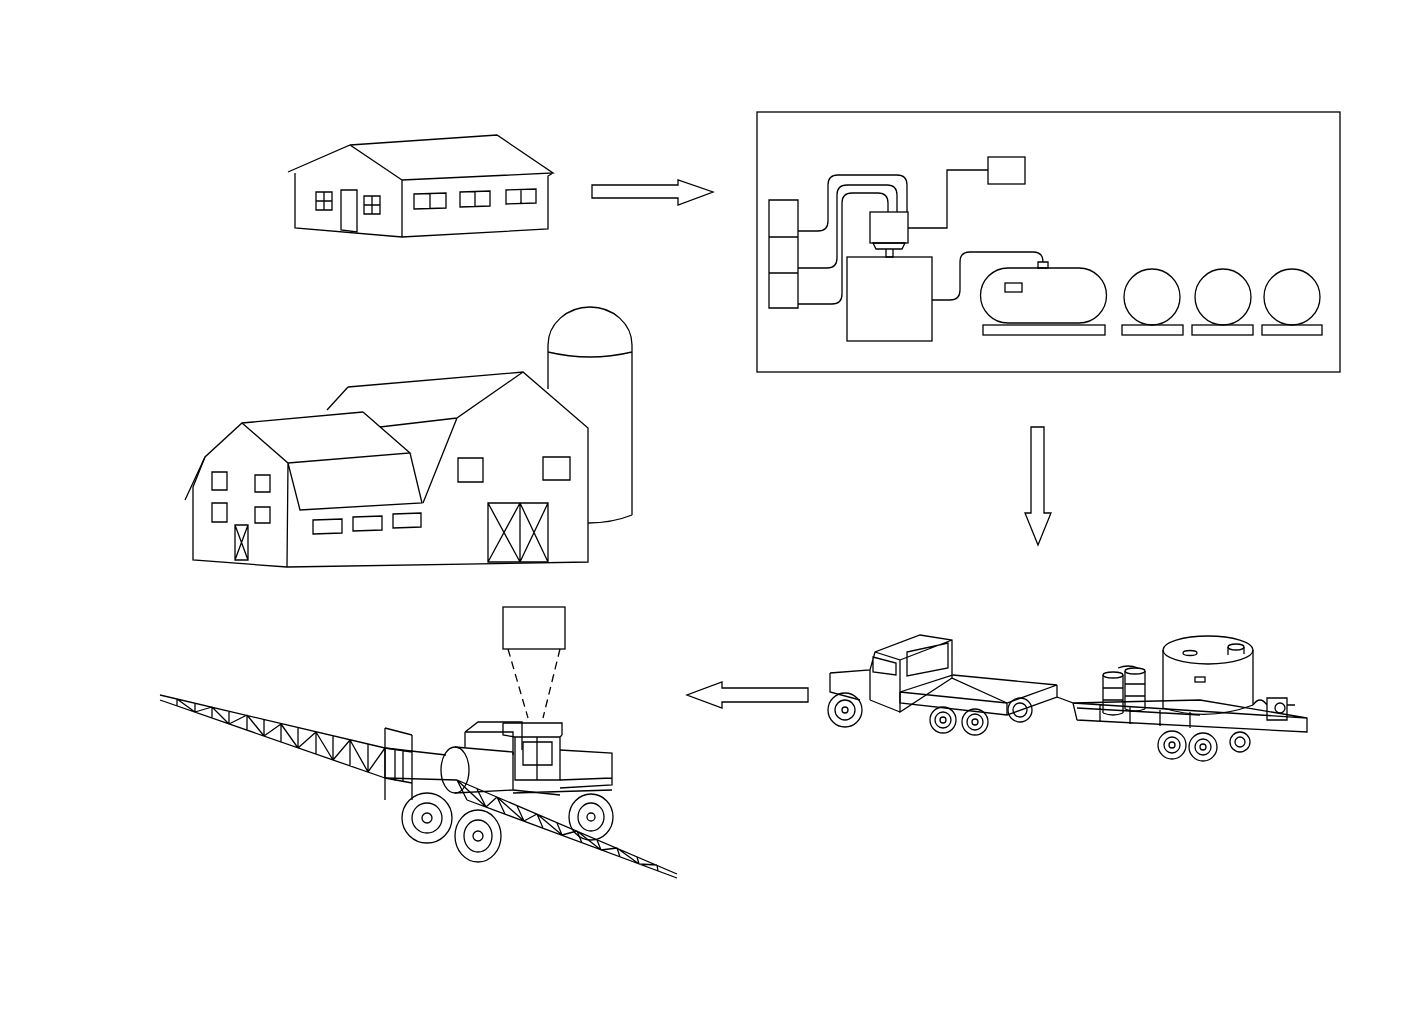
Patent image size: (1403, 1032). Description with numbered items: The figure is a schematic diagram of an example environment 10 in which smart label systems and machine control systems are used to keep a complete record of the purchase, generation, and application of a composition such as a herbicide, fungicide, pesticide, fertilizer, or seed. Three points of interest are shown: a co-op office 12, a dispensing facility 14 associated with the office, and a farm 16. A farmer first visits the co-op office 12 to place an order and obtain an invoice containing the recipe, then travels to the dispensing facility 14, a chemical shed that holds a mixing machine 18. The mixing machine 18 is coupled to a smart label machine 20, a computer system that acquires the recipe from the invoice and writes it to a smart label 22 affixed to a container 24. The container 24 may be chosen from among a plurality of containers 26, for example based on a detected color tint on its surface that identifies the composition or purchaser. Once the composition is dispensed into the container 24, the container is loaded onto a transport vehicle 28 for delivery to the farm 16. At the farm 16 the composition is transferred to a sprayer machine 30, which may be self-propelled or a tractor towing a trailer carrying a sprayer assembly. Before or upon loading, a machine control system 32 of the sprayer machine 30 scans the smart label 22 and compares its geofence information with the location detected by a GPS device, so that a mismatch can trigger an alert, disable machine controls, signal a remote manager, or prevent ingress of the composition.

The environment 10 is at (243, 122).
The co-op office 12 is at (517, 149).
The dispensing facility 14 is at (1138, 112).
The farm 16 is at (288, 388).
The mixing machine 18 is at (914, 210).
The smart label machine 20 is at (1026, 172).
The smart label 22 is at (1012, 293).
The container 24 is at (1063, 268).
The containers 26 is at (1222, 256).
The transport vehicle 28 is at (1286, 667).
The sprayer machine 30 is at (400, 712).
The machine control system 32 is at (521, 642).